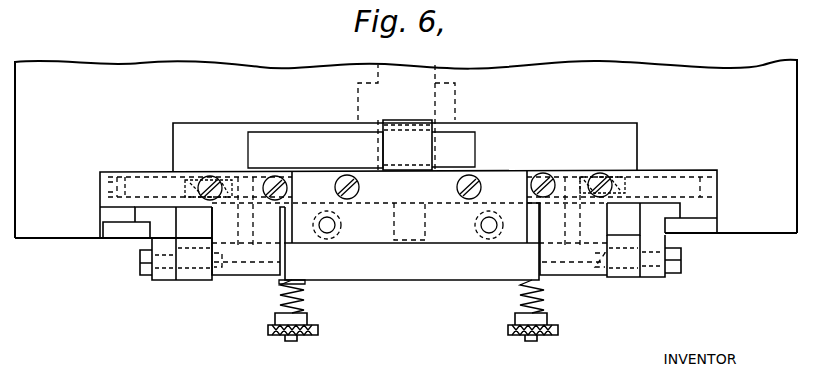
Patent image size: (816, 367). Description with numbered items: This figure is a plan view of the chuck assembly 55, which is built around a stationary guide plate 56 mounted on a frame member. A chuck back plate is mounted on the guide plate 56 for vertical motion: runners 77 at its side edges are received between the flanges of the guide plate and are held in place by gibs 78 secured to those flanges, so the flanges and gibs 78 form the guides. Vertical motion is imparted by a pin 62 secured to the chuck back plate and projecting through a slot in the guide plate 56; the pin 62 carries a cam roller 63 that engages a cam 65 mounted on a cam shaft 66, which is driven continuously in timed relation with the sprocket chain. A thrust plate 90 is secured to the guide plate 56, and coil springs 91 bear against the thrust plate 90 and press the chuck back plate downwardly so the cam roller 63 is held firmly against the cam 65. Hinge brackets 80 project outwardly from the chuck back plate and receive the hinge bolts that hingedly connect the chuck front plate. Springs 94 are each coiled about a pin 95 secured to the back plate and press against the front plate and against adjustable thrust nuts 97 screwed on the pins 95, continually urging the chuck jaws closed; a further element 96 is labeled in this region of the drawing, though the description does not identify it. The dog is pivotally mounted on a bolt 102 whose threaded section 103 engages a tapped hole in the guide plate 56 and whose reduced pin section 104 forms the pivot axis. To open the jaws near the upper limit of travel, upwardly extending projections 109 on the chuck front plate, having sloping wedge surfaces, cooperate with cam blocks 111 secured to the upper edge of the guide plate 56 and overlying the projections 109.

The chuck assembly 55 is at (706, 166).
The stationary guide plate 56 is at (110, 213).
The pin 62 is at (410, 240).
The cam roller 63 is at (387, 145).
The cam 65 is at (270, 142).
The cam shaft 66 is at (435, 73).
The runners 77 is at (143, 213).
The gibs 78 is at (117, 238).
The hinge brackets 80 is at (170, 272).
The thrust plate 90 is at (372, 232).
The coil springs 91 is at (326, 236).
The springs 94 is at (283, 293).
The pin 95 is at (305, 283).
The compression spring 96 is at (527, 258).
The adjustable thrust nuts 97 is at (270, 338).
The bolt 102 is at (100, 188).
The threaded section 103 is at (125, 176).
The pin section 104 is at (408, 220).
The upwardly extending projections 109 is at (230, 272).
The cam blocks 111 is at (228, 272).